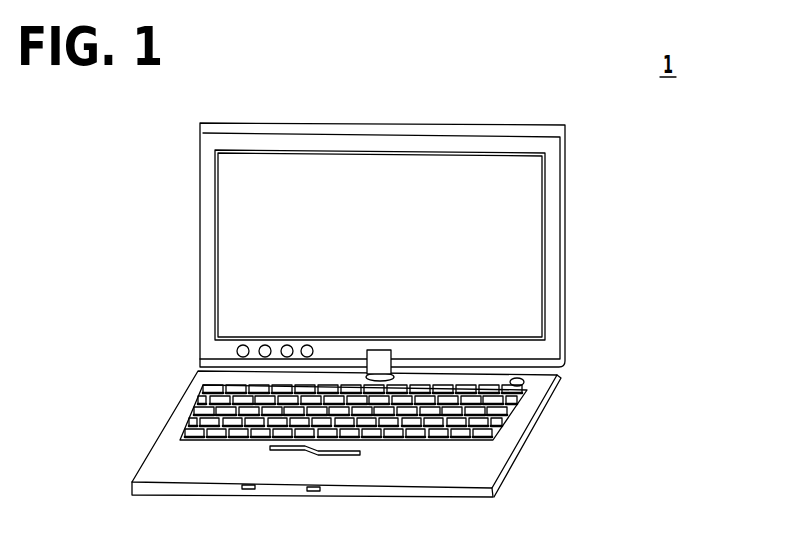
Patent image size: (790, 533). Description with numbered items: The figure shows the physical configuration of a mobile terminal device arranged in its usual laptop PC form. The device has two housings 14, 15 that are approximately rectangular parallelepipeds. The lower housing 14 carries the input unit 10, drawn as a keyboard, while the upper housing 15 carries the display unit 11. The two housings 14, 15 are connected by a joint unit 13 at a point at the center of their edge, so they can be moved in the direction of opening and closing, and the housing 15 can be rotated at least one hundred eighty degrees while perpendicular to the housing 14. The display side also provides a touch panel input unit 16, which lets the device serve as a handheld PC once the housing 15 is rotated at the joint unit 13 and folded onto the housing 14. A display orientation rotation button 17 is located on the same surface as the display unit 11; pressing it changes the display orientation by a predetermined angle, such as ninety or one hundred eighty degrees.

The input unit 10 is at (517, 407).
The display unit 11 is at (546, 173).
The joint unit 13 is at (380, 350).
The housing 14 is at (503, 475).
The housing 15 is at (565, 253).
The touch panel input unit 16 is at (444, 168).
The display orientation rotation button 17 is at (235, 358).